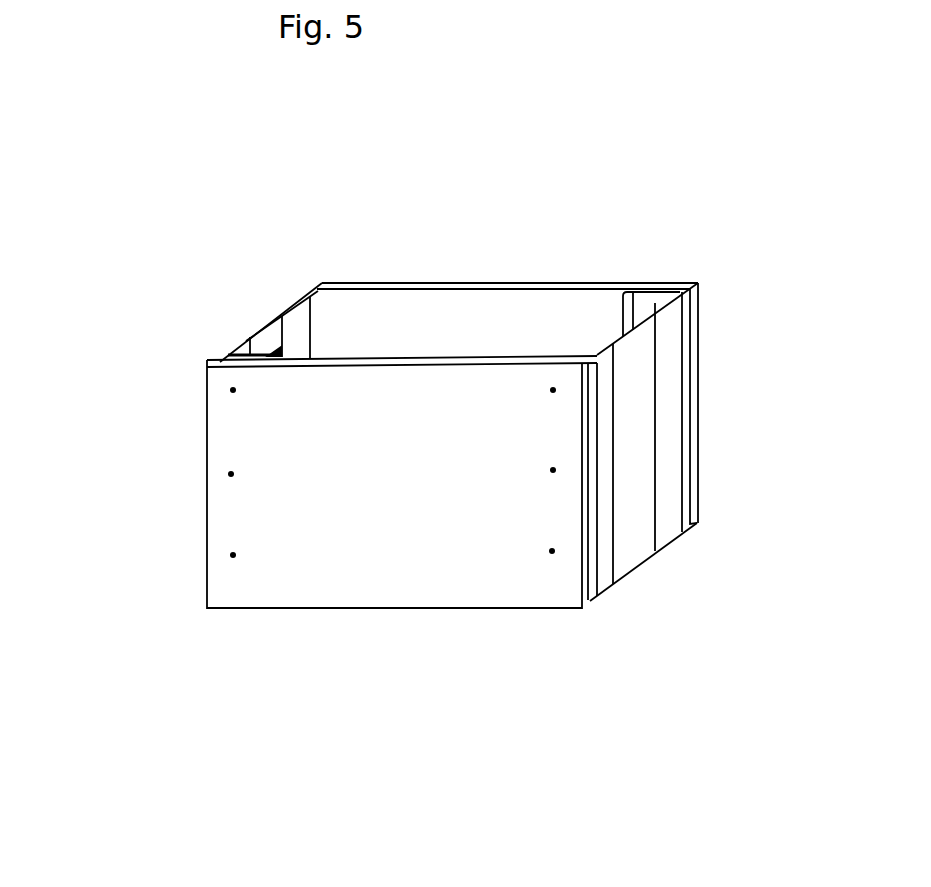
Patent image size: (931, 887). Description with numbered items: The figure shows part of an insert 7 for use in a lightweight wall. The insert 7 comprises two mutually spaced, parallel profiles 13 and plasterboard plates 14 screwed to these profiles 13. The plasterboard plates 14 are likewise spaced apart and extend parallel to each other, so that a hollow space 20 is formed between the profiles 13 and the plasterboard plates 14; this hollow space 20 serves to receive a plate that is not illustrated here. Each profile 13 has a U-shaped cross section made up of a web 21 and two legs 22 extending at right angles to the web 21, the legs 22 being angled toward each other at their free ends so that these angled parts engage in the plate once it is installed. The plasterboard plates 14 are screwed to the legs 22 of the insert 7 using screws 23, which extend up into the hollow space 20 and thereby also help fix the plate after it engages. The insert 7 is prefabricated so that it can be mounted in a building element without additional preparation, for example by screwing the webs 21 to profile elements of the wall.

The insert 7 is at (205, 658).
The profile 13 is at (243, 343).
The plasterboard plate 14 is at (607, 283).
The hollow space 20 is at (425, 322).
The web 21 is at (645, 425).
The leg 22 is at (573, 352).
The screw 23 is at (231, 474).